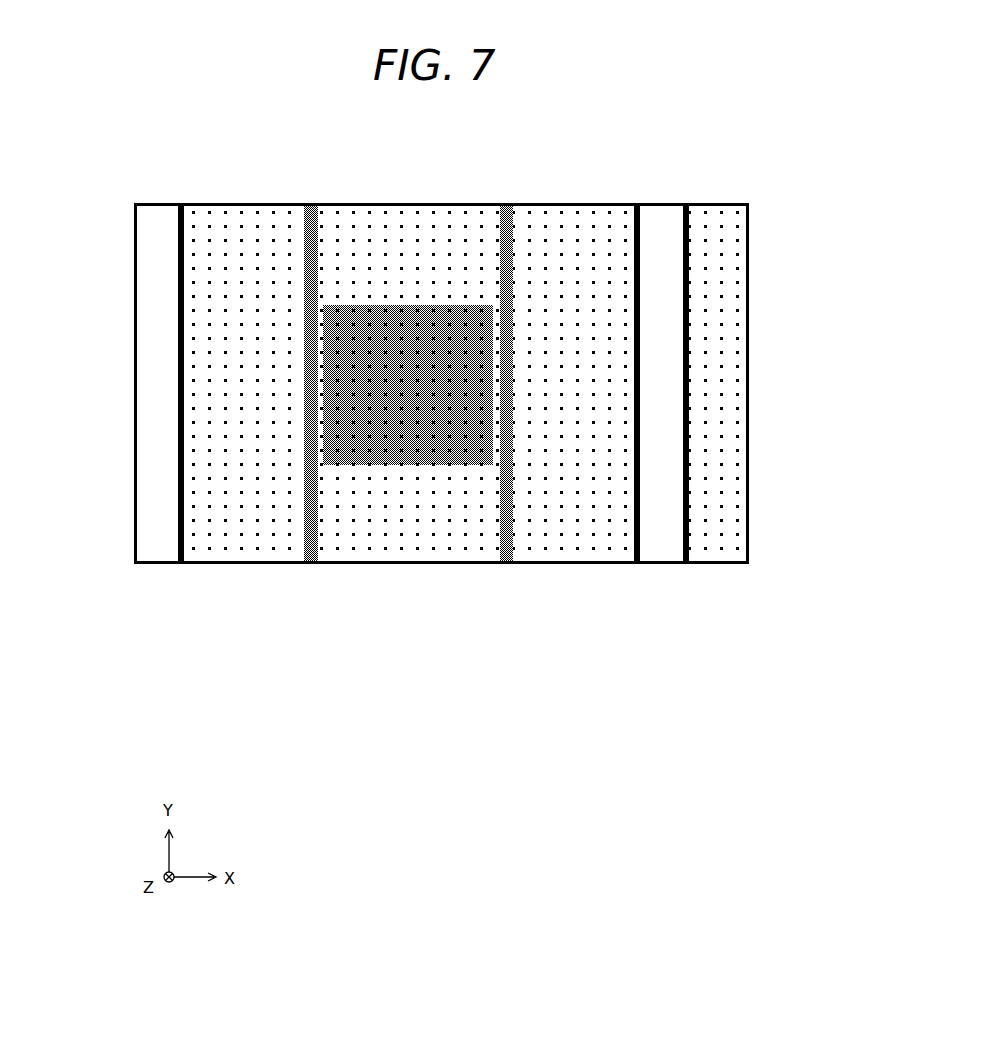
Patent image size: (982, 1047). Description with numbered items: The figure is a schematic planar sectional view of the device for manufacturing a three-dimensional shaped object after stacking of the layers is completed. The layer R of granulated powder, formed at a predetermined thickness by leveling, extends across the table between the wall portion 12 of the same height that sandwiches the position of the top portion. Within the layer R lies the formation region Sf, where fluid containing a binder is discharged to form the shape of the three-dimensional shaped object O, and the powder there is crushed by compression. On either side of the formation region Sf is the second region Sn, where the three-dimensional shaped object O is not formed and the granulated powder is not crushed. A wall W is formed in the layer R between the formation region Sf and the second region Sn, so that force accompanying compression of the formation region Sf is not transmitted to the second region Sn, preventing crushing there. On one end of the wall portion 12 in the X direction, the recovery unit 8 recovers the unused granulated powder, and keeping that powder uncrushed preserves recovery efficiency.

The recovery unit 8 is at (748, 535).
The wall portion 12 is at (135, 350).
The wall W is at (310, 552).
The three-dimensional shaped object O is at (428, 455).
The layer R is at (241, 548).
The second region Sn is at (632, 172).
The formation region Sf is at (505, 139).